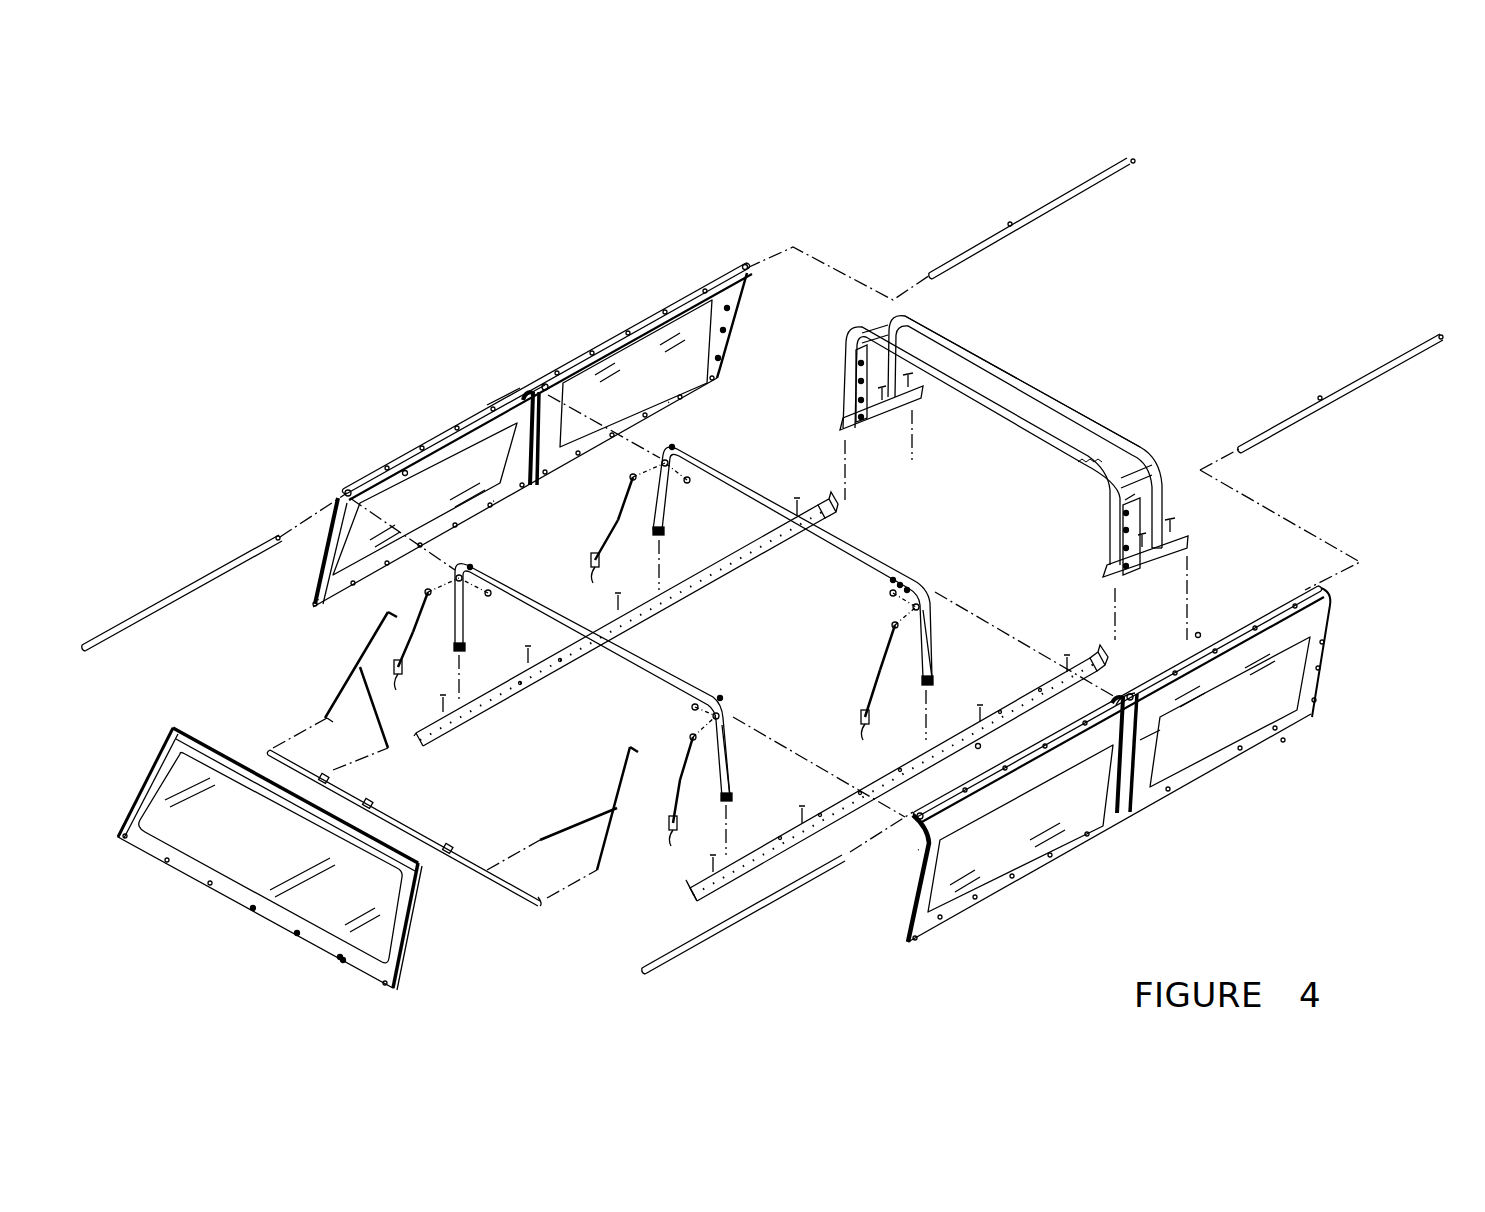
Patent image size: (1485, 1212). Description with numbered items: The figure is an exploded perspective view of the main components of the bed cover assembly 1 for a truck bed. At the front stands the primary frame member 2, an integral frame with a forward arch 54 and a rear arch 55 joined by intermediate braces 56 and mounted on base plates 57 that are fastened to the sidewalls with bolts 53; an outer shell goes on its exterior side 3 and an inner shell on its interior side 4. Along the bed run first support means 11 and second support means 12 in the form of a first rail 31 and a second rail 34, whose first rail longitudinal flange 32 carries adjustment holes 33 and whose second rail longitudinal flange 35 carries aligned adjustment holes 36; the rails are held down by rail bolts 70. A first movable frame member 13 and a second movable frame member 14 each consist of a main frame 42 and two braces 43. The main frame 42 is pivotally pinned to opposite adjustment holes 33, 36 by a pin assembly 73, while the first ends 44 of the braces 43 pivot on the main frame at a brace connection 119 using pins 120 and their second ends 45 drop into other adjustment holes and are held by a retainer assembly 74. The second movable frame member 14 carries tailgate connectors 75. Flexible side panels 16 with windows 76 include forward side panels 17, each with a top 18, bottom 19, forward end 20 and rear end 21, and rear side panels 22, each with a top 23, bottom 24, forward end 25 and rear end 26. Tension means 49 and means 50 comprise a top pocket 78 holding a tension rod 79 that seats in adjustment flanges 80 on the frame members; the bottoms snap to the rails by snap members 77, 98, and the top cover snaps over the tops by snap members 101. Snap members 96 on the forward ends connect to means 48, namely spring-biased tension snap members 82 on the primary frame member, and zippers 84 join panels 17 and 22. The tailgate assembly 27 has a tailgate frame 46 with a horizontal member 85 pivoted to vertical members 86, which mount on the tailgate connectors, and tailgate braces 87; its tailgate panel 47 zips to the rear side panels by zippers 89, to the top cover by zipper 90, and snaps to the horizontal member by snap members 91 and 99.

The invention 1 is at (1128, 292).
The primary frame member 2 is at (1165, 470).
The exterior side 3 is at (1035, 385).
The interior side 4 is at (990, 432).
The first support means 11 is at (1015, 688).
The second support means 12 is at (695, 572).
The first movable frame member 13 is at (865, 545).
The second movable frame member 14 is at (672, 660).
The side panels 16 is at (690, 290).
The forward side panel 17 is at (625, 322).
The top 18 is at (690, 343).
The bottom 19 is at (705, 393).
The forward end 20 is at (725, 340).
The rear ends 21 is at (527, 388).
The rear side panel 22 is at (452, 536).
The top 23 is at (430, 458).
The bottom 24 is at (500, 505).
The forward ends 25 is at (515, 462).
The rear ends 26 is at (318, 566).
The tailgate assembly 27 is at (245, 925).
The first rail 31 is at (840, 796).
The first rail longitudinal flange 32 is at (690, 895).
The adjustment holes 33 is at (820, 822).
The second rail 34 is at (700, 572).
The second rail longitudinal flange 35 is at (414, 742).
The adjustment holes 36 is at (538, 690).
The main frame 42 is at (934, 647).
The braces 43 is at (418, 648).
The first ends 44 is at (424, 593).
The second ends 45 is at (393, 685).
The tailgate frame 46 is at (300, 705).
The tailgate panel 47 is at (405, 951).
The means for connecting forward side panels 48 is at (1150, 515).
The means for maintaining tension 49 is at (850, 345).
The means for maintaining tension 50 is at (363, 507).
The bolts 53 is at (1180, 527).
The forward arch 54 is at (1112, 430).
The rear arch 55 is at (1045, 455).
The intermediate braces 56 is at (868, 322).
The base plates 57 is at (885, 430).
The rail bolts 70 is at (612, 597).
The pin assembly 73 is at (466, 648).
The retainer assembly 74 is at (404, 672).
The tailgate connectors 75 is at (450, 577).
The windows 76 is at (749, 637).
The snap members 77 is at (1170, 792).
The top pocket 78 is at (555, 372).
The tension rod 79 is at (235, 561).
The adjustment flanges 80 is at (856, 362).
The tension snap members 82 is at (855, 402).
The zippers 84 is at (528, 441).
The horizontal member 85 is at (505, 885).
The vertical members 86 is at (355, 671).
The tailgate braces 87 is at (378, 732).
The zippers 89 is at (312, 604).
The zipper 90 is at (200, 745).
The snap members 91 is at (345, 975).
The snap members 96 is at (728, 308).
The snap members 98 is at (1005, 705).
The snap members 99 is at (420, 830).
The snap members 101 is at (744, 268).
The brace connection 119 is at (460, 585).
The pins 120 is at (490, 600).